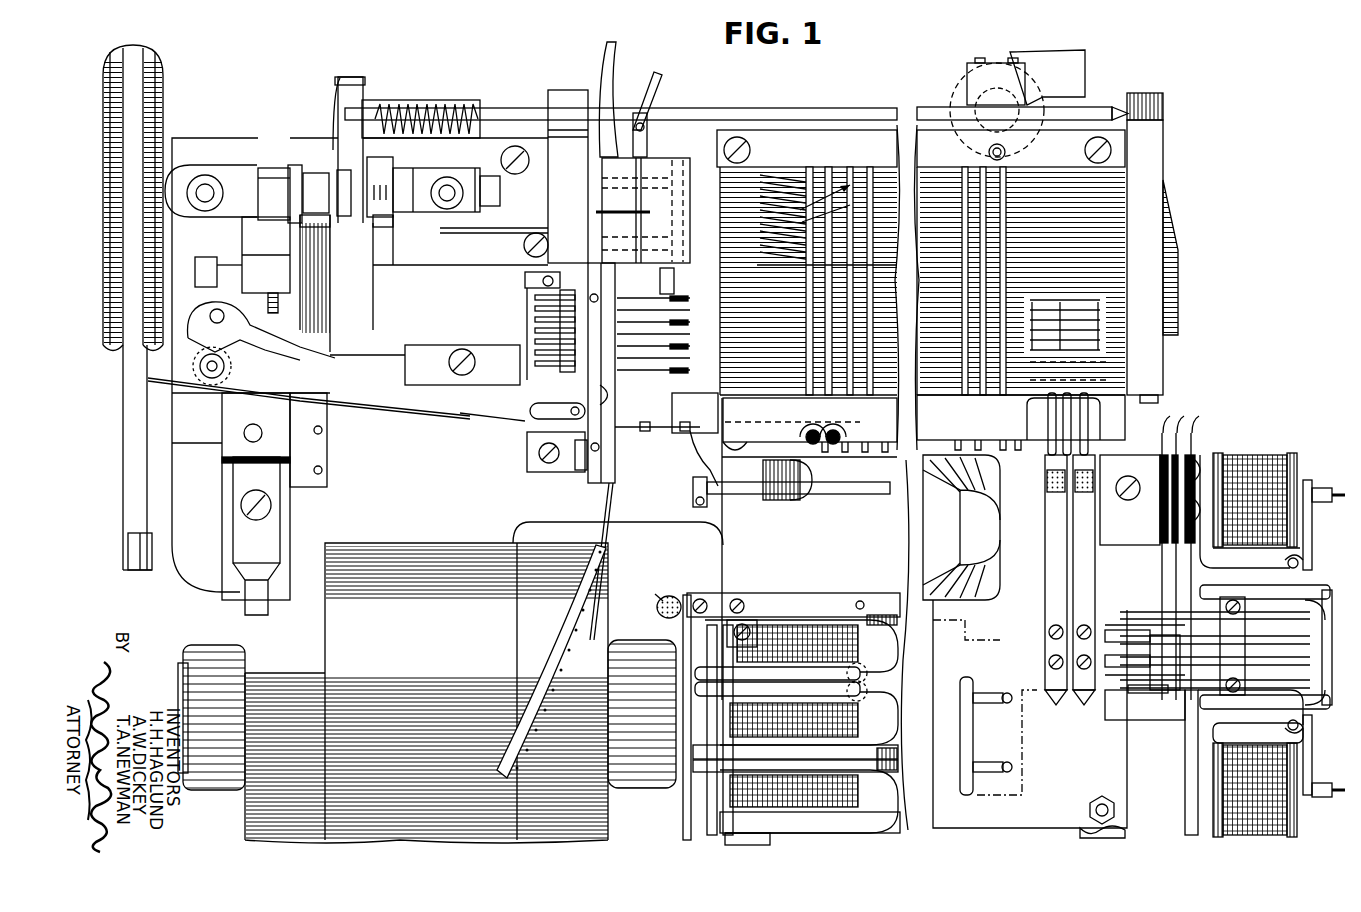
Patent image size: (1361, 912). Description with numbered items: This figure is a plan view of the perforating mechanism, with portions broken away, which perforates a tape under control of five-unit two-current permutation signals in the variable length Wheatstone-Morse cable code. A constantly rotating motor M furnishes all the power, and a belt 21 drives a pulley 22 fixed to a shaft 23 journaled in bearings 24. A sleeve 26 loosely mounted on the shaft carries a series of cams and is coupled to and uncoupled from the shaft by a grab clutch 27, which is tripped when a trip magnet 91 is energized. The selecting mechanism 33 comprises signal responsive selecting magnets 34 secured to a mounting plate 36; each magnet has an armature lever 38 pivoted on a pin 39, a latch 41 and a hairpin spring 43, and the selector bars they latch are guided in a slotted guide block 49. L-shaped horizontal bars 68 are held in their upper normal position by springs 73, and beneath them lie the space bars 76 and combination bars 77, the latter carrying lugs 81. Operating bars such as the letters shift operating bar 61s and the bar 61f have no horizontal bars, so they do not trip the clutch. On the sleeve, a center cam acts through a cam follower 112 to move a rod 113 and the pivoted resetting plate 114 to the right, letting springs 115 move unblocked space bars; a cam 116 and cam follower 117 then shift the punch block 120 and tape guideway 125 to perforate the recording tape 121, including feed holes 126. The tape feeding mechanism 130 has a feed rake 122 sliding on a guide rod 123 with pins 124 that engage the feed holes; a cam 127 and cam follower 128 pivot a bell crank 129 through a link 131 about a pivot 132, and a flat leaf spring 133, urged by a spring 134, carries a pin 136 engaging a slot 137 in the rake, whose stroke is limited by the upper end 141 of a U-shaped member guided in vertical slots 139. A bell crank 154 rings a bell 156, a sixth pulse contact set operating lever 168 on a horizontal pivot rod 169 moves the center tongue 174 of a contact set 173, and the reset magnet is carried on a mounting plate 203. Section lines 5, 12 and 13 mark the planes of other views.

The belt 21 is at (130, 523).
The pulley 22 is at (150, 113).
The shaft 23 is at (486, 194).
The bearings 24 is at (188, 172).
The sleeve 26 is at (294, 163).
The grab clutch 27 is at (270, 168).
The selecting mechanism 33 is at (1270, 450).
The selecting magnets 34 is at (1250, 465).
The mounting plate 36 is at (1185, 790).
The armature levers 38 is at (1312, 532).
The pins 39 is at (1300, 562).
The latches 41 is at (1310, 618).
The hairpin spring 43 is at (1312, 660).
The slotted guide block 49 is at (1266, 647).
The letters shift operating bar 61s is at (1110, 362).
The operating bar 61f is at (1110, 380).
The horizontal bars 68 is at (827, 282).
The spring 73 is at (818, 432).
The space bars 76 is at (920, 305).
The combination bars 77 is at (772, 180).
The lugs 81 is at (808, 205).
The trip magnet 91 is at (300, 478).
The cam follower 112 is at (346, 172).
The rod 113 is at (856, 110).
The resetting plate 114 is at (1165, 330).
The springs 115 is at (1036, 298).
The cam 116 is at (395, 170).
The cam follower 117 is at (380, 222).
The punch block 120 is at (598, 230).
The recording tape 121 is at (606, 500).
The feed rake 122 is at (609, 411).
The guide rod 123 is at (570, 357).
The pins 124 is at (609, 385).
The tape guideway 125 is at (620, 287).
The feed holes 126 is at (575, 642).
The cam 127 is at (316, 173).
The cam follower 128 is at (322, 224).
The bell crank 129 is at (254, 331).
The tape feeding mechanism 130 is at (520, 421).
The link 131 is at (288, 318).
The pivot 132 is at (211, 378).
The flat leaf spring 133 is at (332, 395).
The spring 134 is at (165, 376).
The pin 136 is at (570, 411).
The slot 137 is at (572, 470).
The vertical slots 139 is at (535, 312).
The upper end of U-shaped member arm 141 is at (1048, 415).
The bell crank 154 is at (1040, 478).
The bell 156 is at (985, 575).
The sixth pulse contact set operating lever 168 is at (1150, 645).
The horizontal pivot rod 169 is at (1168, 690).
The contact set 173 is at (1162, 535).
The center tongue 174 is at (1176, 566).
The mounting plate 203 is at (912, 510).
The post 12 is at (1056, 705).
The post 13 is at (1084, 705).
The relay stack 5 is at (915, 600).
The motor M is at (398, 648).